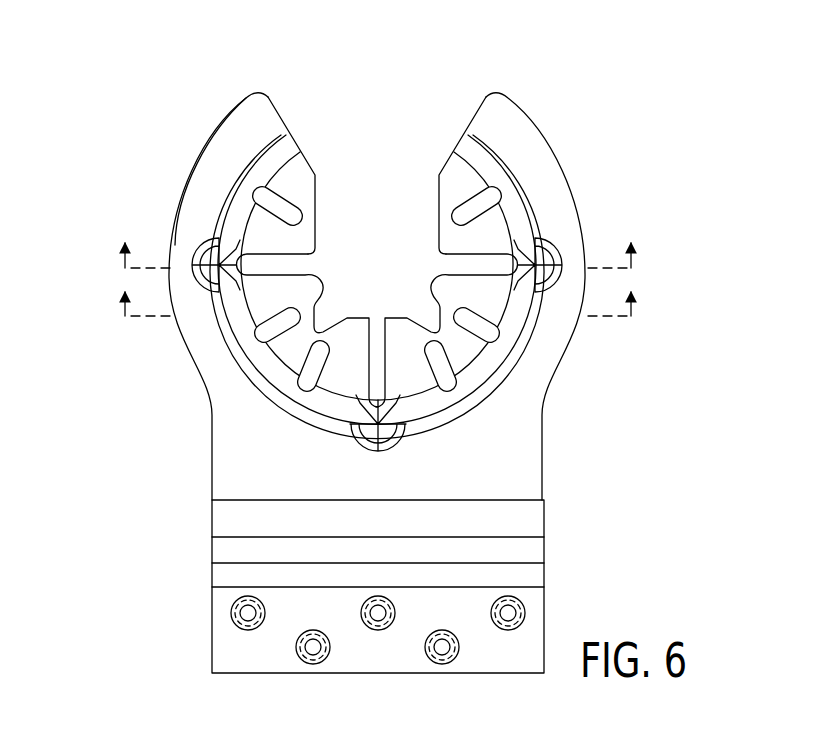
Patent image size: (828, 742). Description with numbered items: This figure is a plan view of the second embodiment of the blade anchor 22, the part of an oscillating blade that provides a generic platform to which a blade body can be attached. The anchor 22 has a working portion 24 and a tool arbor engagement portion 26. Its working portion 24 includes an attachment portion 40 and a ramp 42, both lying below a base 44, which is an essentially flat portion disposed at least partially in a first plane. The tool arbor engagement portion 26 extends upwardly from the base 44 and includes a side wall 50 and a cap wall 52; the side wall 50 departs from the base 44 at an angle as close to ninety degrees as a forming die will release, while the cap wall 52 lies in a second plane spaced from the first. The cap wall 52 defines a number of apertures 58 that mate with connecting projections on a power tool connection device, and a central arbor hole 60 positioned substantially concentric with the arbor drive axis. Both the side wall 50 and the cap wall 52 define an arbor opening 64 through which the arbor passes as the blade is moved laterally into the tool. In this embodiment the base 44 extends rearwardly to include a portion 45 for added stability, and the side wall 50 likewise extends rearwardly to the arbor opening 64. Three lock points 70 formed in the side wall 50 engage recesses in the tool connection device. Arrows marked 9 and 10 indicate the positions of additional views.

The anchor 22 is at (592, 353).
The working portion 24 is at (198, 614).
The tool arbor engagement portion 26 is at (194, 132).
The attachment portion 40 is at (530, 625).
The ramp 42 is at (528, 552).
The base 44 is at (277, 484).
The rearwardly extending portion 45 is at (250, 118).
The side wall 50 is at (300, 408).
The cap wall 52 is at (285, 350).
The apertures 58 is at (267, 197).
The central arbor hole 60 is at (392, 304).
The arbor opening 64 is at (392, 151).
The lock point 70 is at (210, 253).
The section line 10 is at (376, 251).
The section line 9 is at (377, 300).